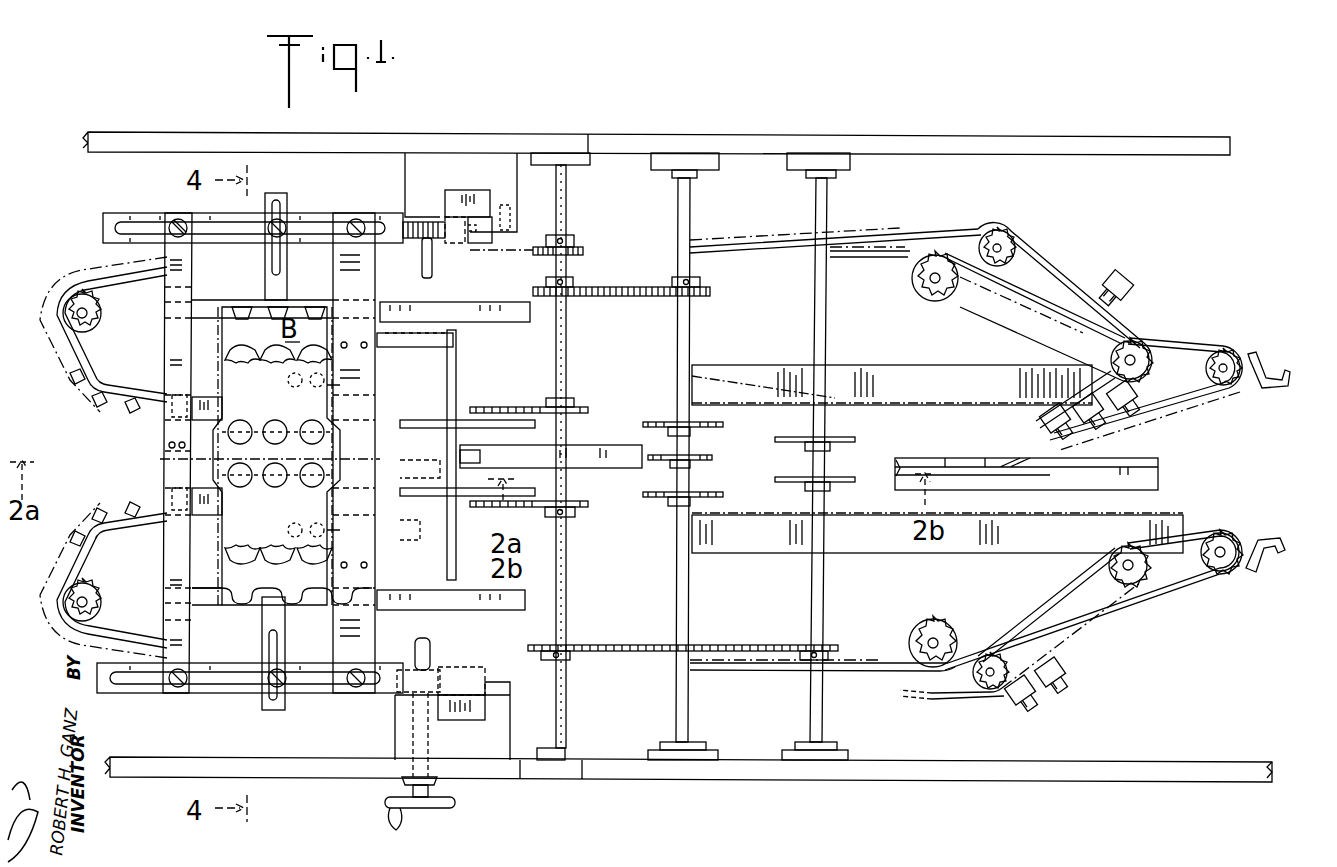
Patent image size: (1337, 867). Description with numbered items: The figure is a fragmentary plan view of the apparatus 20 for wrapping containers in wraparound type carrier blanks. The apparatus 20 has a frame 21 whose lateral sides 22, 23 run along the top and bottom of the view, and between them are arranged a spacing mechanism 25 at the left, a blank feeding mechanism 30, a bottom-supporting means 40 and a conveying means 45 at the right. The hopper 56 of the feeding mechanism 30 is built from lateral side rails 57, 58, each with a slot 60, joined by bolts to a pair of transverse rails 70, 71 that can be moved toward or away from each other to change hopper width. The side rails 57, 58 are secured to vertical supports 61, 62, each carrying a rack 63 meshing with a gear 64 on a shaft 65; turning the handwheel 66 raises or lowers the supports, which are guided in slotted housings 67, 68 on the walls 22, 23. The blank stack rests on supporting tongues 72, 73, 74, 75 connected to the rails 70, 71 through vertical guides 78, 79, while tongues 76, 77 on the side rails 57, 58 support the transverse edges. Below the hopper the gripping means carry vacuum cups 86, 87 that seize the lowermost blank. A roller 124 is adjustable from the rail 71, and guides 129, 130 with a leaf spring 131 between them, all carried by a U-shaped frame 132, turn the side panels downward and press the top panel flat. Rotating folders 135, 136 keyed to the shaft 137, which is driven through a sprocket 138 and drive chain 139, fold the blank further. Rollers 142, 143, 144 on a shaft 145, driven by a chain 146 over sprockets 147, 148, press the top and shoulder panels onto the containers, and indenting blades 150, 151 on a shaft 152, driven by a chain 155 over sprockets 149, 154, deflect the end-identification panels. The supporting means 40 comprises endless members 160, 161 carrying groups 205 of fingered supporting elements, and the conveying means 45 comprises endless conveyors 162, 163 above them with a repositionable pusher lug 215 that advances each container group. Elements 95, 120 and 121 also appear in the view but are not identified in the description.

The apparatus 20 is at (1050, 124).
The frame 21 is at (752, 790).
The lateral side 22 is at (902, 140).
The lateral side 23 is at (935, 782).
The spacing mechanism 25 is at (112, 494).
The blank feeding mechanism 30 is at (366, 212).
The bottom-supporting means 40 is at (1004, 714).
The conveying means 45 is at (1190, 324).
The hopper 56 is at (336, 210).
The lateral side rail 57 is at (138, 215).
The lateral side rail 58 is at (105, 692).
The slot 60 is at (244, 240).
The vertical support 61 is at (480, 204).
The vertical support 62 is at (500, 682).
The rack 63 is at (440, 252).
The gear 64 is at (418, 222).
The shaft 65 is at (432, 662).
The handwheel 66 is at (420, 808).
The slotted housing 67 is at (486, 180).
The slotted housing 68 is at (478, 746).
The rail 70 is at (170, 328).
The rail 71 is at (362, 272).
The supporting tongue 72 is at (202, 396).
The supporting tongue 73 is at (204, 515).
The supporting tongue 74 is at (386, 396).
The supporting tongue 75 is at (409, 529).
The supporting tongue 76 is at (278, 286).
The supporting tongue 77 is at (268, 630).
The vertical guide 78 is at (228, 405).
The vertical guide 79 is at (330, 384).
The vacuum cup 86 is at (294, 388).
The vacuum cup 87 is at (316, 388).
The drive assembly 95 is at (660, 390).
The upper tie bar 120 is at (500, 320).
The lower tie bar 121 is at (512, 610).
The roller 124 is at (215, 459).
The guide 129 is at (377, 406).
The guide 130 is at (390, 488).
The leaf spring 131 is at (500, 470).
The U-shaped frame 132 is at (396, 334).
The rotating folder 135 is at (528, 406).
The rotating folder 136 is at (530, 500).
The shaft 137 is at (556, 582).
The sprocket 138 is at (572, 246).
The drive chain 139 is at (514, 250).
The rotating roller 142 is at (706, 424).
The rotating roller 143 is at (705, 456).
The rotating roller 144 is at (702, 492).
The shaft 145 is at (700, 352).
The chain 146 is at (640, 298).
The sprocket 147 is at (570, 288).
The sprocket 148 is at (702, 290).
The sprocket 149 is at (570, 660).
The indenting blade 150 is at (845, 440).
The indenting blade 151 is at (842, 478).
The shaft 152 is at (836, 364).
The sprocket 154 is at (808, 660).
The chain 155 is at (752, 644).
The endless member 160 is at (904, 236).
The endless member 161 is at (962, 700).
The endless conveyor 162 is at (1038, 294).
The endless conveyor 163 is at (880, 668).
The group of supporting elements 205 is at (1150, 280).
The pusher lug 215 is at (1264, 374).